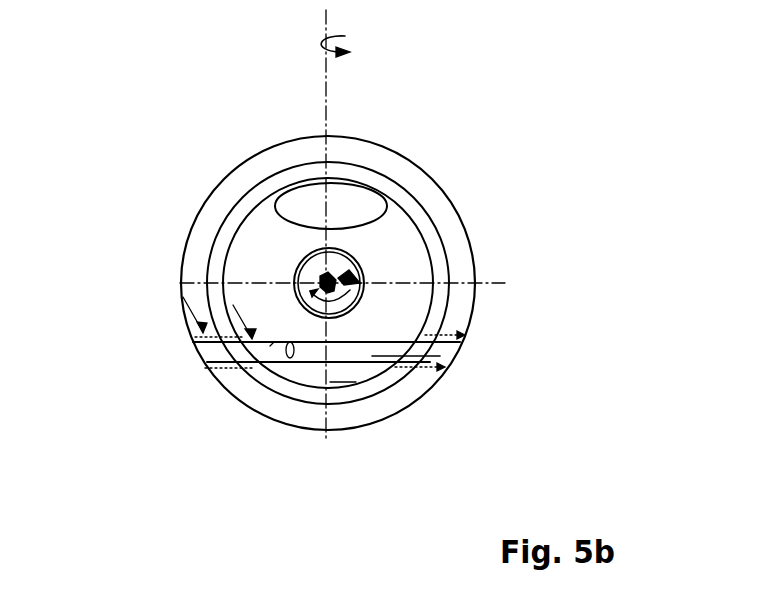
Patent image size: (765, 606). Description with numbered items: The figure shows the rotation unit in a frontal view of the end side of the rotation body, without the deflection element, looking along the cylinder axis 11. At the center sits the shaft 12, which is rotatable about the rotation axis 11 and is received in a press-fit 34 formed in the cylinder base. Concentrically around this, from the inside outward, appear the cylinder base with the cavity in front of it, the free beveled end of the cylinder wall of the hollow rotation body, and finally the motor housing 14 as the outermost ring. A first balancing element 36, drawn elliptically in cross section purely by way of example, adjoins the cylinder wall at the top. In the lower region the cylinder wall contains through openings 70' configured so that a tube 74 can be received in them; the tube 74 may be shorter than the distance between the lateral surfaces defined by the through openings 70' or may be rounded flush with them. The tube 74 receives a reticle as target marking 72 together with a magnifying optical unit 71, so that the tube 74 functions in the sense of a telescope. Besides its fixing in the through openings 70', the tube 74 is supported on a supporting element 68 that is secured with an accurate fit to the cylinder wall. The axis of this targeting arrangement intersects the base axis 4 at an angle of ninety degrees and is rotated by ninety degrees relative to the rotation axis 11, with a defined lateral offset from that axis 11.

The base axis 4 is at (322, 23).
The motor housing 14 is at (304, 146).
The balancing element 36 is at (298, 200).
The rotation axis 11 is at (322, 280).
The shaft 12 is at (338, 276).
The press-fit 34 is at (360, 268).
The through openings 70' is at (340, 351).
The tube 74 is at (440, 353).
The target marking 72 is at (272, 346).
The magnifying optical unit 71 is at (288, 360).
The supporting element 68 is at (343, 380).